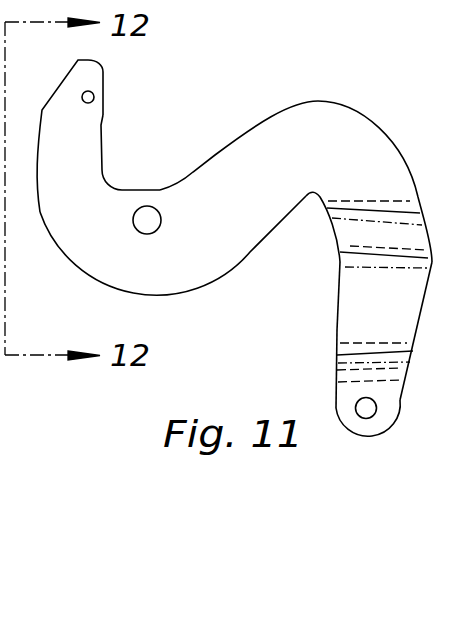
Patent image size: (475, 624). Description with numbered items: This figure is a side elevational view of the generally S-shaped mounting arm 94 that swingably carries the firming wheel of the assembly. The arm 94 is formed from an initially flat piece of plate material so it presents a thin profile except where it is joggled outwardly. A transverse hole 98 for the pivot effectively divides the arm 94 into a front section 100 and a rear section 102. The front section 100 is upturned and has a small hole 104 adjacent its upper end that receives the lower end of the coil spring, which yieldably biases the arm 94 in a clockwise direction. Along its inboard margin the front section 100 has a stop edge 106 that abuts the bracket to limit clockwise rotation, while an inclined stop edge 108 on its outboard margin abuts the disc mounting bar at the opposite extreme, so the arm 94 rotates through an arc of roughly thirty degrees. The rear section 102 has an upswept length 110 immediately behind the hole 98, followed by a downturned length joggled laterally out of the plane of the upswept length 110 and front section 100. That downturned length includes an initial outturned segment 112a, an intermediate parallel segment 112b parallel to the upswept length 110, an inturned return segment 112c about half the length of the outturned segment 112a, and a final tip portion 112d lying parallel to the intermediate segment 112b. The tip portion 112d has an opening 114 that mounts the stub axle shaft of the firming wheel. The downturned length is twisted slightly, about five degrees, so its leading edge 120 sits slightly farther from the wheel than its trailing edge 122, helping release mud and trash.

The mounting arm 94 is at (346, 92).
The transverse hole 98 is at (147, 222).
The front section 100 is at (52, 240).
The rear section 102 is at (424, 158).
The small hole 104 is at (94, 98).
The stop edge 106 is at (105, 72).
The inclined stop edge 108 is at (53, 92).
The upswept length 110 is at (235, 162).
The outturned segment 112a is at (378, 235).
The intermediate parallel segment 112b is at (362, 325).
The return segment 112c is at (400, 362).
The tip portion 112d is at (373, 425).
The opening 114 is at (360, 408).
The leading edge 120 is at (335, 295).
The trailing edge 122 is at (430, 290).